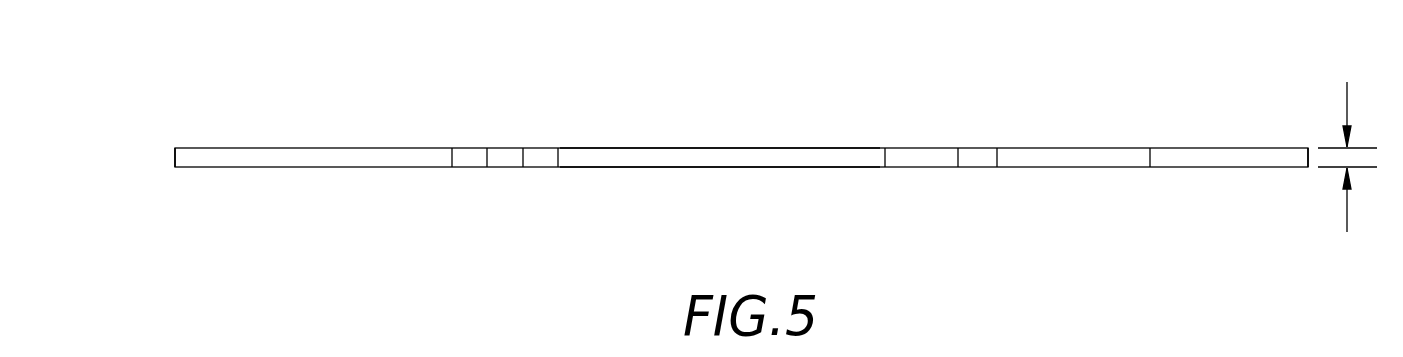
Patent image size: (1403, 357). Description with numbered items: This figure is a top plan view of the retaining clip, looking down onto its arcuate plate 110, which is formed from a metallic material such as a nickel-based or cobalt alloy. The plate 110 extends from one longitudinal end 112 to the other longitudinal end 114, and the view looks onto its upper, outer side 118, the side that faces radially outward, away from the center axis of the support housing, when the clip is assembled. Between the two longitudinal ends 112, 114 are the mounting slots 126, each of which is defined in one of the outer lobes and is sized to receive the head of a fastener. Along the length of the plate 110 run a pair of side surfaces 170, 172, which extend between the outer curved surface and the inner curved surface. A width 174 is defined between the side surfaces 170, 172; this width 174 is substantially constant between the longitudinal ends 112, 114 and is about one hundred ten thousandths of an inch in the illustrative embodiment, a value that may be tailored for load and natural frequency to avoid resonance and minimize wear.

The arcuate plate 110 is at (712, 128).
The longitudinal end 112 is at (175, 156).
The longitudinal end 114 is at (1258, 150).
The outer side 118 is at (808, 148).
The mounting slot 126 is at (500, 148).
The side surface 170 is at (627, 167).
The side surface 172 is at (652, 149).
The width 174 is at (1345, 107).